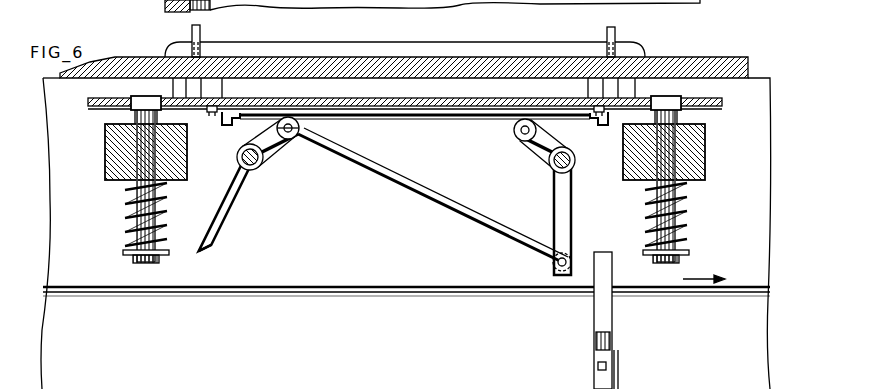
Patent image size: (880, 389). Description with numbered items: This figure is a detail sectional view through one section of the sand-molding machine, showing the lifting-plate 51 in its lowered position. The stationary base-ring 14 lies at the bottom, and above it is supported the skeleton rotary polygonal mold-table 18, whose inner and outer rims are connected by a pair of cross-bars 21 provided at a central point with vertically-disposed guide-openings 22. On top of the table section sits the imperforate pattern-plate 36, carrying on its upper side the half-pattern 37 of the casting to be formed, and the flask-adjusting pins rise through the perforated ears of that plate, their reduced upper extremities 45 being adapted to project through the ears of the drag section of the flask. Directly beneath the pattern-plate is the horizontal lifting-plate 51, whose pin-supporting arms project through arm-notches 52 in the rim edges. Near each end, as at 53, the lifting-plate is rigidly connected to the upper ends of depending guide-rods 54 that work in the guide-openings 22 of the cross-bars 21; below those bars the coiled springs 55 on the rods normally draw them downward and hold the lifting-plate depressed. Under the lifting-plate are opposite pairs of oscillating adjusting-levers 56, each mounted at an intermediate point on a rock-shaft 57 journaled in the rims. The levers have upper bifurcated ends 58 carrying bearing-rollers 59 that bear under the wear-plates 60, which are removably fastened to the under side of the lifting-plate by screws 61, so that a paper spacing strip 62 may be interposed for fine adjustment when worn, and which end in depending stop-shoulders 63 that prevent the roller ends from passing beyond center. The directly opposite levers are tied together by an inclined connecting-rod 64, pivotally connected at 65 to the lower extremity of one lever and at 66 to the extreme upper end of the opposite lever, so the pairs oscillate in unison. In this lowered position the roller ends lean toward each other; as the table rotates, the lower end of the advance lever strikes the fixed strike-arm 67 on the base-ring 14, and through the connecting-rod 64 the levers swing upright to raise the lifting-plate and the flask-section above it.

The base-ring 14 is at (268, 326).
The rotary polygonal mold-table 18 is at (305, 252).
The cross-bars 21 is at (105, 147).
The guide-openings 22 is at (140, 160).
The pattern-plate 36 is at (462, 70).
The half-pattern 37 is at (363, 50).
The reduced upper extremities 45 is at (200, 30).
The lifting-plate 51 is at (398, 98).
The arm-notches 52 is at (212, 90).
The rigid connection of guide-rods 53 is at (148, 98).
The guide-rods 54 is at (131, 228).
The coiled springs 55 is at (131, 200).
The oscillating adjusting-levers 56 is at (587, 222).
The rock-shafts 57 is at (262, 161).
The bifurcated ends 58 is at (283, 142).
The bearing-rollers 59 is at (300, 130).
The wear-plates 60 is at (397, 113).
The screws 61 is at (212, 117).
The spacing strip 62 is at (453, 113).
The stop-shoulders 63 is at (228, 126).
The connecting-rods 64 is at (430, 200).
The pivotal connection to lower lever end 65 is at (557, 265).
The pivotal connection to upper lever end 66 is at (277, 128).
The strike-arm 67 is at (605, 316).